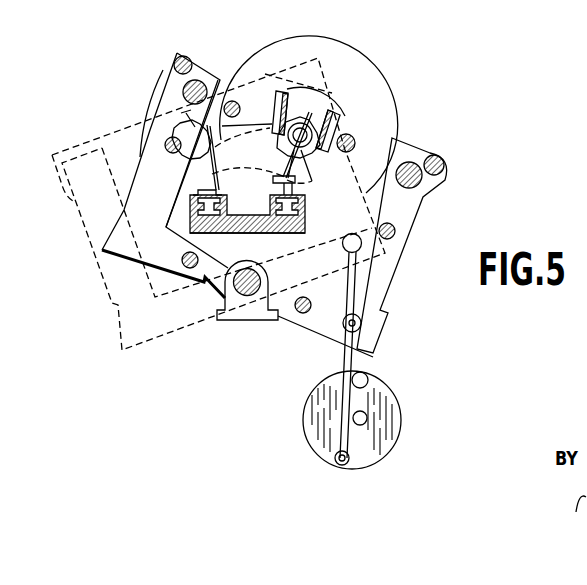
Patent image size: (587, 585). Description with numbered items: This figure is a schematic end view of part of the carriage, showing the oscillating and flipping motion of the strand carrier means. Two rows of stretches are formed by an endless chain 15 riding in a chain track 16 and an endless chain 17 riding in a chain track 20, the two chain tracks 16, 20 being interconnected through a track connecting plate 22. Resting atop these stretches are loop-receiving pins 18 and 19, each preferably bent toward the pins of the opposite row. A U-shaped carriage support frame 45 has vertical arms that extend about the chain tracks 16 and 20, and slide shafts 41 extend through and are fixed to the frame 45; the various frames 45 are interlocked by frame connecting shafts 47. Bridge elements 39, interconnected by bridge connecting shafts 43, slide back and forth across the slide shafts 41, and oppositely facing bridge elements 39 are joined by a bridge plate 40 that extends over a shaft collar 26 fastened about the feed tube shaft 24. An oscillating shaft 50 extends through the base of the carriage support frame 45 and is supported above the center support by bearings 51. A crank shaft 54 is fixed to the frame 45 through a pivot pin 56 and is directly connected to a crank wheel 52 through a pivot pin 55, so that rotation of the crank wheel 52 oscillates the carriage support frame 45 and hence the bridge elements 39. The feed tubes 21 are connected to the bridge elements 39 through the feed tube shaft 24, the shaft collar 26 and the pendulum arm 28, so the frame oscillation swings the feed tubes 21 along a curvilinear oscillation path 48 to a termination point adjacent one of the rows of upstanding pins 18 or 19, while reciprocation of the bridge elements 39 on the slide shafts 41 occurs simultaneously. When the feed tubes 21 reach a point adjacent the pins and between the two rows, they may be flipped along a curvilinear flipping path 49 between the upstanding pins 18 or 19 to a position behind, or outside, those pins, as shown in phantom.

The endless chain 15 is at (267, 170).
The chain track 16 is at (195, 204).
The endless chain 17 is at (297, 188).
The pins 18 is at (221, 163).
The pins 19 is at (312, 155).
The chain track 20 is at (318, 203).
The feed tubes 21 is at (219, 142).
The track connecting plate 22 is at (258, 233).
The feed tube shaft 24 is at (312, 130).
The shaft collar 26 is at (316, 122).
The pendulum arm 28 is at (279, 90).
The bridge elements 39 is at (208, 66).
The bridge plate 40 is at (362, 75).
The slide shafts 41 is at (185, 93).
The bridge connecting shafts 43 is at (176, 61).
The carriage support frame 45 is at (376, 288).
The frame connecting shafts 47 is at (182, 260).
The curvilinear oscillation path 48 is at (249, 227).
The curvilinear flipping path 49 is at (206, 185).
The oscillating shaft 50 is at (247, 290).
The bearings 51 is at (223, 305).
The crank wheel 52 is at (385, 411).
The crank shaft 54 is at (347, 353).
The pivot pin 55 is at (341, 465).
The pivot pin 56 is at (361, 323).